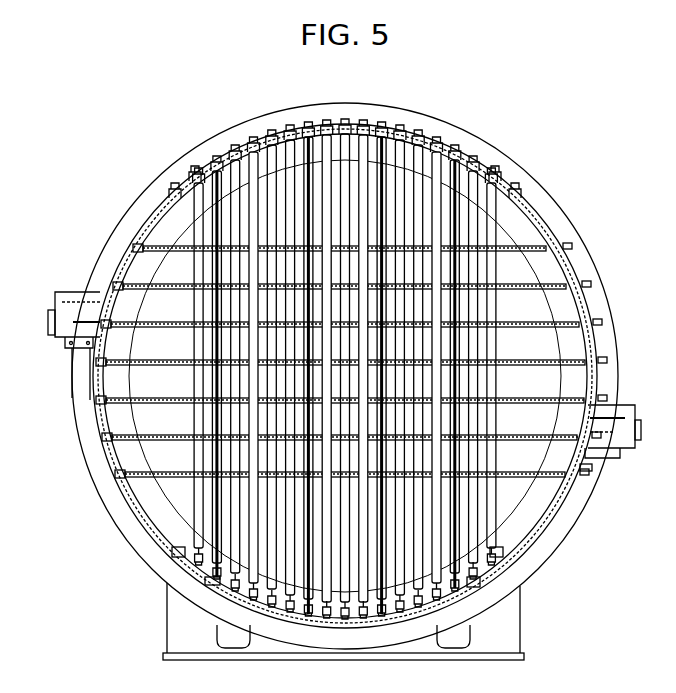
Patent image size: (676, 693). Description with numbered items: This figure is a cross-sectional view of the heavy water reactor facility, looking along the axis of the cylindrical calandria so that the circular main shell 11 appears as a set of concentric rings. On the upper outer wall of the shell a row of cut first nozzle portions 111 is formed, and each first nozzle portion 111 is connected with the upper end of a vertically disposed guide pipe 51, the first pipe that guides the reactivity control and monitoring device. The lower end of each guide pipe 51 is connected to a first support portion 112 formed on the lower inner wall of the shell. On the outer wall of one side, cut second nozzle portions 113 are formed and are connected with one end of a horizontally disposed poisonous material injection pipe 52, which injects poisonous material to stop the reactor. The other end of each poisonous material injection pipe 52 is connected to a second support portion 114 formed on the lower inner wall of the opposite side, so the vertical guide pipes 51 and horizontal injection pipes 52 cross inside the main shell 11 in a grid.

The main shell 11 is at (552, 523).
The guide pipe 51 is at (447, 487).
The poisonous material injection pipe 52 is at (512, 473).
The first nozzle portion 111 is at (183, 163).
The first support portion 112 is at (198, 588).
The second nozzle portion 113 is at (583, 280).
The second support portion 114 is at (107, 303).